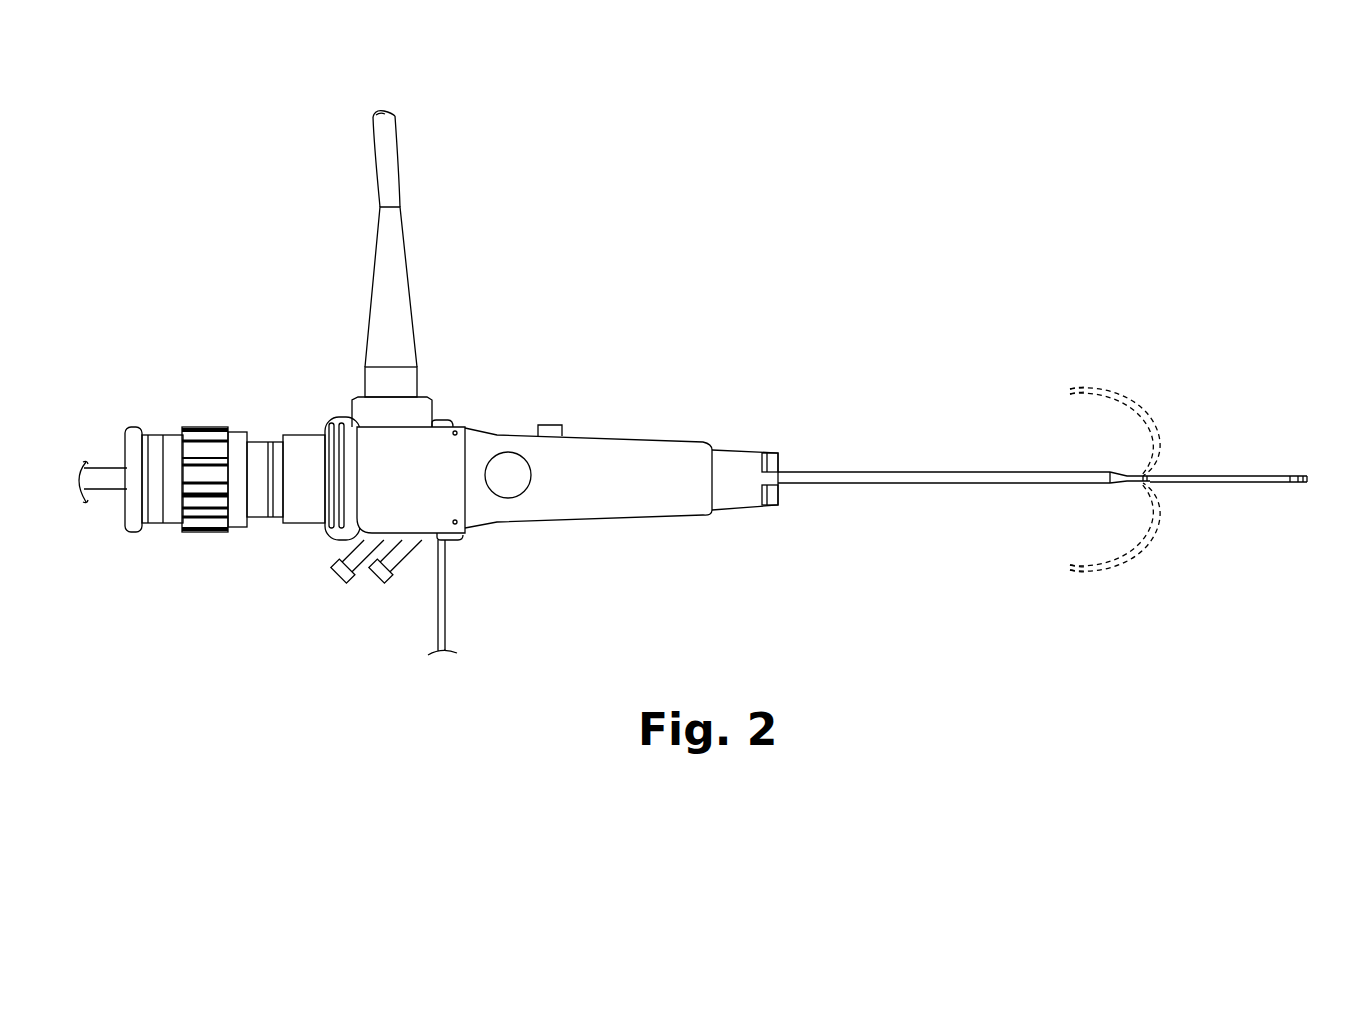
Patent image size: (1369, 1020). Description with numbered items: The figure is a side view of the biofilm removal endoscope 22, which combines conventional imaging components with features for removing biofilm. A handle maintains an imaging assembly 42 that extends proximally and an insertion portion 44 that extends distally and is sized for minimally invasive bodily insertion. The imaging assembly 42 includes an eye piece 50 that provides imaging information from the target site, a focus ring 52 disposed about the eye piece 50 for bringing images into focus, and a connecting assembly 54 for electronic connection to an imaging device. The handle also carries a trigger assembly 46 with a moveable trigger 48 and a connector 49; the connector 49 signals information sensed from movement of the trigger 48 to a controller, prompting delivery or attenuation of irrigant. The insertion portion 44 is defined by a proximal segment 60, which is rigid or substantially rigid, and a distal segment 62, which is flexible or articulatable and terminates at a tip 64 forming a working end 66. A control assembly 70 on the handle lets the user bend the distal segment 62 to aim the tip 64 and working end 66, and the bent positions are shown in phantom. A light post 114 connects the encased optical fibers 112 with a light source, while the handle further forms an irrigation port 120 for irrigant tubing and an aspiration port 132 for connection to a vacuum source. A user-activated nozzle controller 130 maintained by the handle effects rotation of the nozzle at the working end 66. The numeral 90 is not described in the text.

The biofilm removal endoscope 22 is at (877, 137).
The imaging assembly 42 is at (90, 426).
The insertion portion 44 is at (982, 493).
The trigger assembly 46 is at (569, 420).
The trigger 48 is at (552, 424).
The connector 49 is at (452, 607).
The eye piece 50 is at (160, 538).
The focus ring 52 is at (195, 424).
The connecting assembly 54 is at (105, 491).
The proximal segment 60 is at (1010, 472).
The distal segment 62 is at (1138, 402).
The tip 64 is at (1289, 472).
The working end 66 is at (1066, 388).
The control assembly 70 is at (330, 417).
The handle 90 is at (608, 523).
The optical fiber bundle 112 is at (395, 115).
The light post 114 is at (416, 296).
The irrigation port 120 is at (398, 590).
The nozzle controller 130 is at (506, 452).
The aspiration port 132 is at (327, 585).